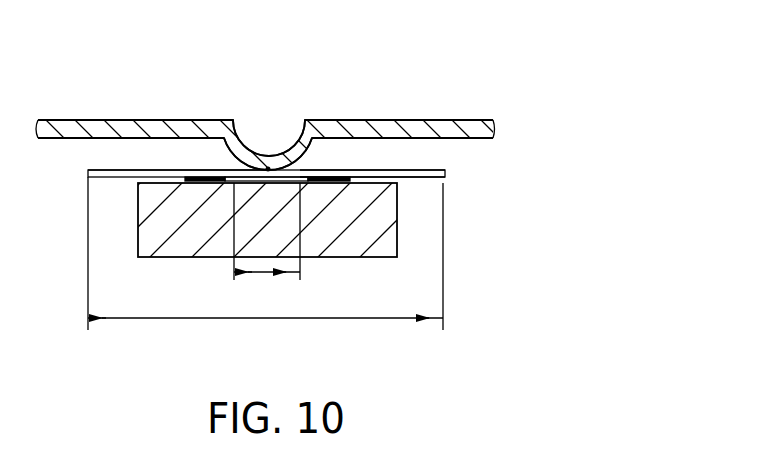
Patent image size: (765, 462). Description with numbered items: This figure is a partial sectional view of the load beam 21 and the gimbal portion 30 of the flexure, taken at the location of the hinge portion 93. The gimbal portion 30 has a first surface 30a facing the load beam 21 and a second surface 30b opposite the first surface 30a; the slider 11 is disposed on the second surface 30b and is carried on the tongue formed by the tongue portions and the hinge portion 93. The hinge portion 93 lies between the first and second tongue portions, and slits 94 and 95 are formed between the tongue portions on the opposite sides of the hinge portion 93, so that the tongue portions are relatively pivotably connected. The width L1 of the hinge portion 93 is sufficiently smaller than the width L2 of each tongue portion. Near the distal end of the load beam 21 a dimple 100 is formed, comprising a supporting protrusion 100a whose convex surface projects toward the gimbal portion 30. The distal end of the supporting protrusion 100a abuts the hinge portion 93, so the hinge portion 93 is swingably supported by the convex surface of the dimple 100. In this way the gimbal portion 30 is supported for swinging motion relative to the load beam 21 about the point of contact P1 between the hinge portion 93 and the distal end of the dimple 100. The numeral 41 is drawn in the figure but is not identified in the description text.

The slider 11 is at (360, 248).
The load beam 21 is at (416, 120).
The gimbal portion 30 is at (472, 175).
The first surface 30a is at (368, 170).
The second surface 30b is at (413, 180).
The fixed contacts 41 is at (200, 177).
The hinge portion 93 is at (266, 168).
The slit 94 is at (380, 170).
The slit 95 is at (163, 170).
The dimple 100 is at (272, 152).
The supporting protrusion 100a is at (282, 165).
The point of contact P1 is at (268, 172).
The width of the hinge portion L1 is at (268, 275).
The width of the tongue portions L2 is at (240, 320).